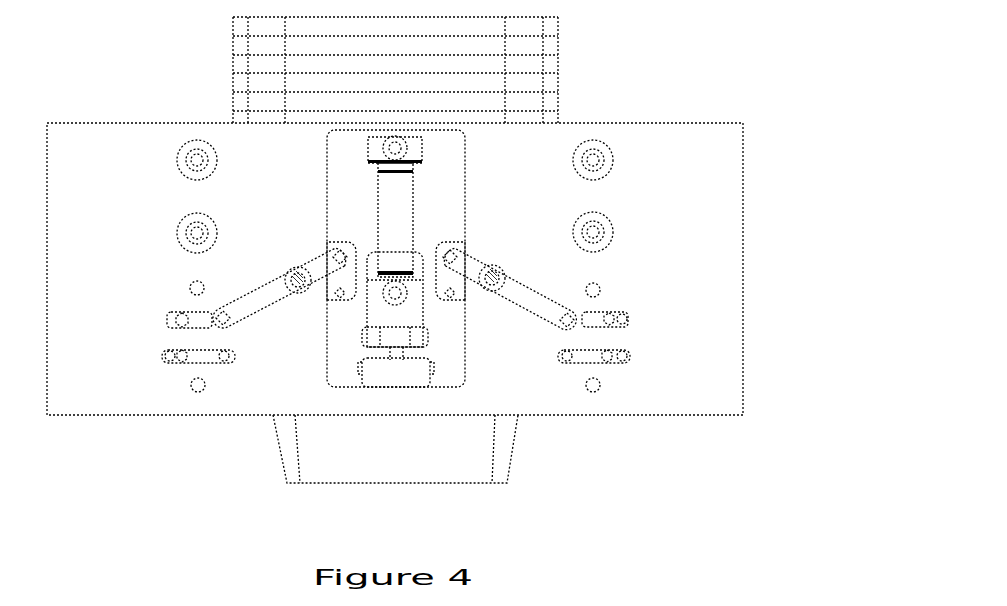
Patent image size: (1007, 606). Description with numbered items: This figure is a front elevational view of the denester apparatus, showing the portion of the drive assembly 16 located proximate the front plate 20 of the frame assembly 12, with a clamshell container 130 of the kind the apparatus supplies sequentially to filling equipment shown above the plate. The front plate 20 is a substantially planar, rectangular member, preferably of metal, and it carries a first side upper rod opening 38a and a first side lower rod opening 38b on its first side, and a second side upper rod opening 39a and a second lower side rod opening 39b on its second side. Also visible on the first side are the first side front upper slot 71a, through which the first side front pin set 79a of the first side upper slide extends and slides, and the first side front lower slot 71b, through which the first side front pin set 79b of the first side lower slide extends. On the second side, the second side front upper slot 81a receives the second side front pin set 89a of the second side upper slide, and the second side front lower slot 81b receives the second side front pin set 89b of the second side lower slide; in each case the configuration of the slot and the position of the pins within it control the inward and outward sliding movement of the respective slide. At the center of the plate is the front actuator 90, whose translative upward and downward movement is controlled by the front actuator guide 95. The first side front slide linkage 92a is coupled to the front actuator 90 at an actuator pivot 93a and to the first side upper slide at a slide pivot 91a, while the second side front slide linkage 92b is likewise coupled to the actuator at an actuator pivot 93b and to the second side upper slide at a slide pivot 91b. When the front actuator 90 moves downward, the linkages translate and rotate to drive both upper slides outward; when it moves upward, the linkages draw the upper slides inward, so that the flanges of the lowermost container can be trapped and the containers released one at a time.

The frame assembly 12 is at (435, 303).
The drive assembly 16 is at (379, 270).
The front plate 20 is at (728, 203).
The first side upper rod opening 38a is at (188, 285).
The first side lower rod opening 38b is at (198, 393).
The second side upper rod opening 39a is at (598, 285).
The second lower side rod opening 39b is at (597, 394).
The first side front upper slot 71a is at (193, 327).
The first side front lower slot 71b is at (211, 365).
The first side front pin set 79a is at (172, 322).
The first side front pin set 79b is at (177, 363).
The second side front upper slot 81a is at (617, 310).
The second side front lower slot 81b is at (637, 362).
The second side front pin set 89a is at (608, 326).
The second side front pin set 89b is at (616, 364).
The front actuator 90 is at (470, 180).
The slide pivot 91a is at (228, 324).
The slide pivot 91b is at (561, 326).
The first side front slide linkage 92a is at (264, 274).
The second side front slide linkage 92b is at (521, 275).
The actuator pivot 93a is at (333, 256).
The actuator pivot 93b is at (457, 256).
The front actuator guide 95 is at (364, 338).
The clamshell container 130 is at (557, 68).